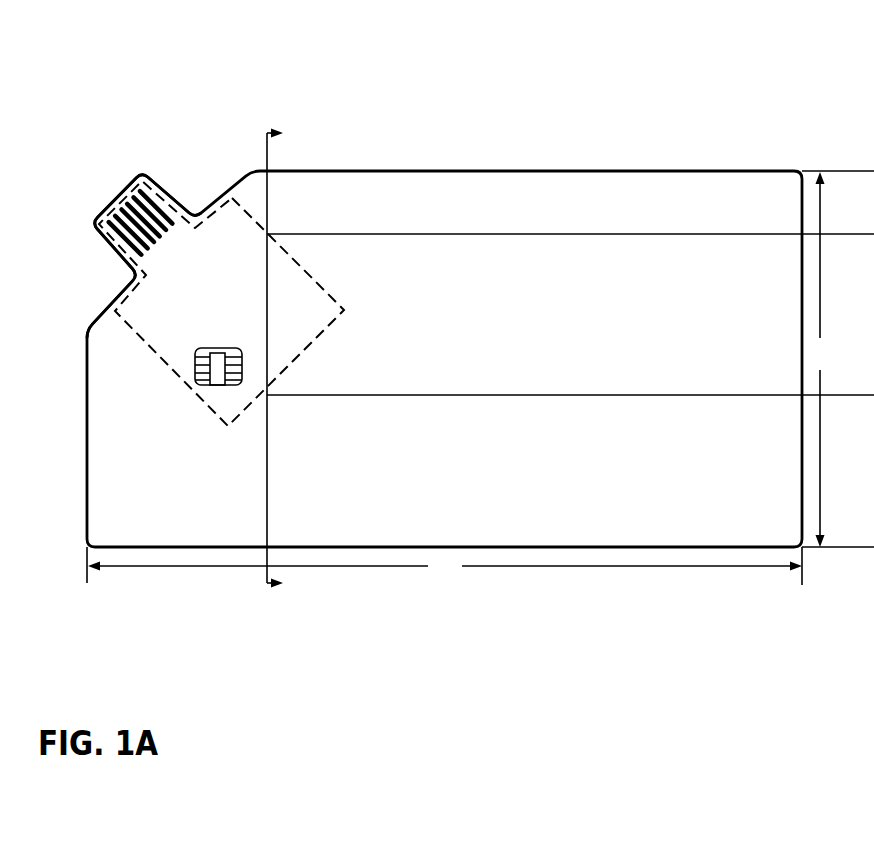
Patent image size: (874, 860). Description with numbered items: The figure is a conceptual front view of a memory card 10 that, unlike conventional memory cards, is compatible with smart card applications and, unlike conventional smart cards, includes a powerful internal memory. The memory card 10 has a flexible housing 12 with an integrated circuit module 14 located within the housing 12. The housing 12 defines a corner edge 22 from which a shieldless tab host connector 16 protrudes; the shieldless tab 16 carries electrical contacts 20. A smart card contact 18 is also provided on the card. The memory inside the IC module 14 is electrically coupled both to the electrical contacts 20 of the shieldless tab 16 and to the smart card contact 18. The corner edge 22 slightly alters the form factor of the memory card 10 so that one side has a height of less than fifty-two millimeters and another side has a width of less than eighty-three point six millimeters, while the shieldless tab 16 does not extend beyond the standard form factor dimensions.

The memory card 10 is at (142, 112).
The flexible housing 12 is at (552, 188).
The integrated circuit (IC) module 14 is at (302, 313).
The shieldless tab host connector 16 is at (157, 167).
The smart card contact 18 is at (183, 367).
The electrical contacts 20 is at (157, 255).
The corner edge 22 is at (125, 289).